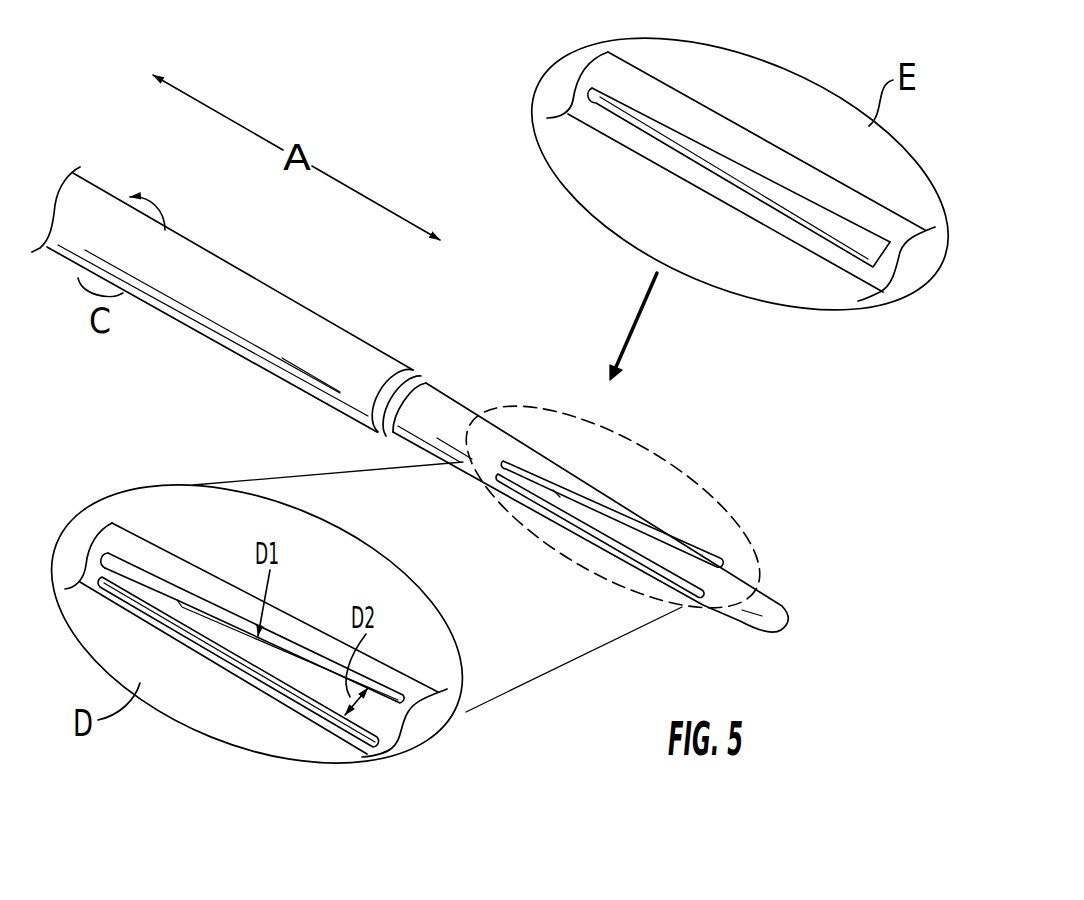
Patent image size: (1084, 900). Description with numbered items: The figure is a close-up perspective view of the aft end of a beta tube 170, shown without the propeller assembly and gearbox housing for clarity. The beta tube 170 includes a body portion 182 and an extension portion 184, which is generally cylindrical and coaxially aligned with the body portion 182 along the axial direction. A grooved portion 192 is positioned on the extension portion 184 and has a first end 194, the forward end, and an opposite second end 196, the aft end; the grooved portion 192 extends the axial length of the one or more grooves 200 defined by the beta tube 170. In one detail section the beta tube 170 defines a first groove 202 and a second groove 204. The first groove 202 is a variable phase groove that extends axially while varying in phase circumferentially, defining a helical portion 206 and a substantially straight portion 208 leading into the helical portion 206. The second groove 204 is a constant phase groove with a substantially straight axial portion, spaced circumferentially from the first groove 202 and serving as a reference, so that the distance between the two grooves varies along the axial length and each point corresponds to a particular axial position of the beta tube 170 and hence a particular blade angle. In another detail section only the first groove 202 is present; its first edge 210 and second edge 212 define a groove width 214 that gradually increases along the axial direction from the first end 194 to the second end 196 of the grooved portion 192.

The beta tube 170 is at (375, 293).
The body portion 182 is at (243, 357).
The extension portion 184 is at (472, 425).
The grooved portion 192 is at (641, 467).
The first end 194 is at (538, 438).
The second end 196 is at (730, 540).
The grooves 200 is at (671, 515).
The first groove 202 is at (303, 641).
The second groove 204 is at (273, 688).
The helical portion 206 is at (236, 602).
The substantially straight portion 208 is at (157, 571).
The first edge 210 is at (679, 127).
The second edge 212 is at (688, 160).
The groove width 214 is at (813, 280).